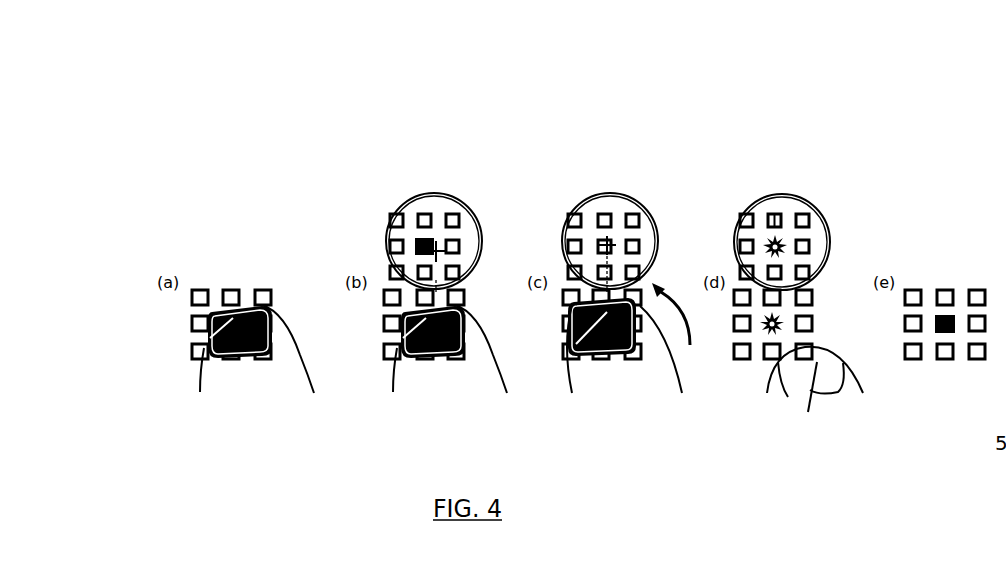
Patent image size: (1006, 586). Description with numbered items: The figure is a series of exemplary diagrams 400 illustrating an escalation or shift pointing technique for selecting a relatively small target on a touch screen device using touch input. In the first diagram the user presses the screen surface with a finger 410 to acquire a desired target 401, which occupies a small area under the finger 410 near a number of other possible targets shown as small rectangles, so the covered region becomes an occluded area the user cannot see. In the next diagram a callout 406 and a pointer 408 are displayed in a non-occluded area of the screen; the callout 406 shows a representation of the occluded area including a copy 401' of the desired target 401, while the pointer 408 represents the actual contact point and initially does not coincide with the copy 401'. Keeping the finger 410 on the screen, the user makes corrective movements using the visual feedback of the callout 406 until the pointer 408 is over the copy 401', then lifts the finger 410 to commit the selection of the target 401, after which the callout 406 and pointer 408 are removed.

The series of exemplary diagrams 400 is at (880, 97).
The desired target 401 is at (555, 372).
The copy of the desired target 401' is at (591, 204).
The callout 406 is at (390, 221).
The pointer 408 is at (442, 248).
The finger 410 is at (263, 365).